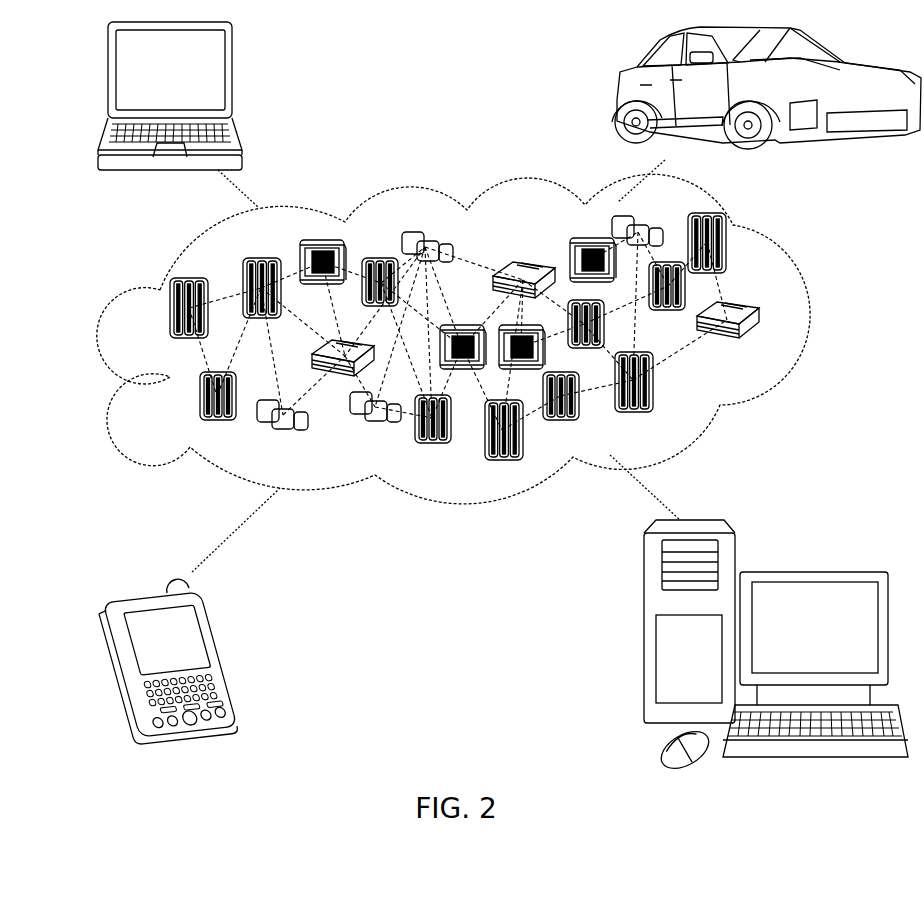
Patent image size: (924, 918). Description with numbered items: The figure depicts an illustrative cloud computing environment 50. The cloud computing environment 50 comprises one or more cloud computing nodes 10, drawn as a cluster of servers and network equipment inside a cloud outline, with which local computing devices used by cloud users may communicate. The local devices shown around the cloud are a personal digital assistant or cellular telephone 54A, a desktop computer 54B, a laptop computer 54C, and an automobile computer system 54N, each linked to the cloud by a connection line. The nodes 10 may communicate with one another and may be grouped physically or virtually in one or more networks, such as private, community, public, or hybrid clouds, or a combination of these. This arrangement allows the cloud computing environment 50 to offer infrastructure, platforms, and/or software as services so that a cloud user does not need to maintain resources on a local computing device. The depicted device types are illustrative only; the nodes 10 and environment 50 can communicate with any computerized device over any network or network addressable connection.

The cloud computing nodes 10 is at (768, 347).
The cloud computing environment 50 is at (812, 312).
The personal digital assistant or cellular telephone 54A is at (226, 656).
The desktop computer 54B is at (812, 570).
The laptop computer 54C is at (232, 74).
The automobile computer system 54N is at (618, 92).